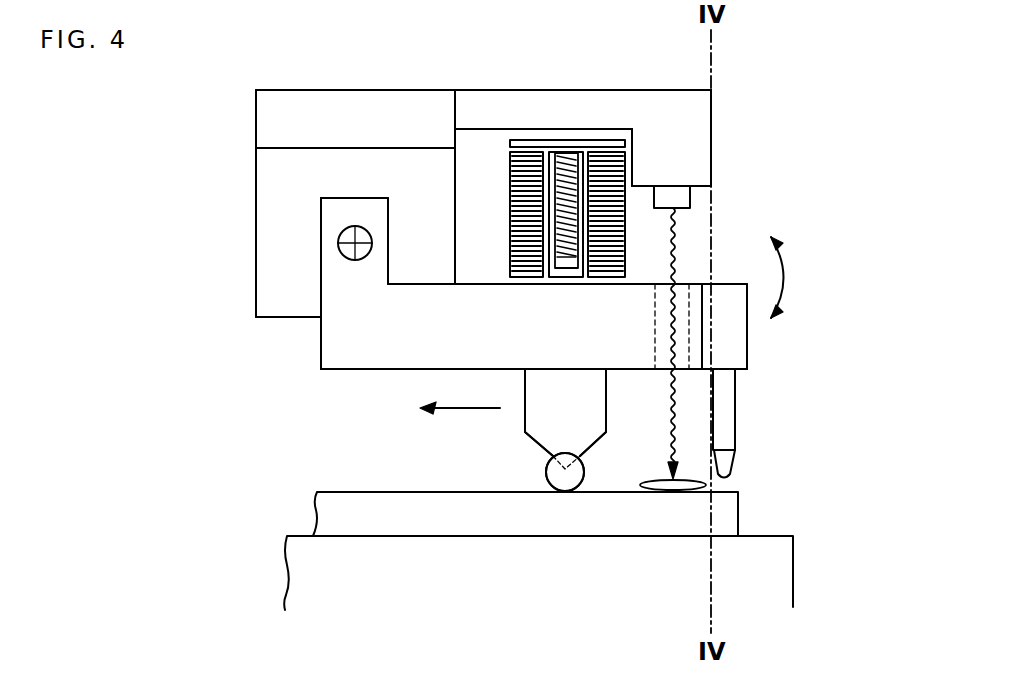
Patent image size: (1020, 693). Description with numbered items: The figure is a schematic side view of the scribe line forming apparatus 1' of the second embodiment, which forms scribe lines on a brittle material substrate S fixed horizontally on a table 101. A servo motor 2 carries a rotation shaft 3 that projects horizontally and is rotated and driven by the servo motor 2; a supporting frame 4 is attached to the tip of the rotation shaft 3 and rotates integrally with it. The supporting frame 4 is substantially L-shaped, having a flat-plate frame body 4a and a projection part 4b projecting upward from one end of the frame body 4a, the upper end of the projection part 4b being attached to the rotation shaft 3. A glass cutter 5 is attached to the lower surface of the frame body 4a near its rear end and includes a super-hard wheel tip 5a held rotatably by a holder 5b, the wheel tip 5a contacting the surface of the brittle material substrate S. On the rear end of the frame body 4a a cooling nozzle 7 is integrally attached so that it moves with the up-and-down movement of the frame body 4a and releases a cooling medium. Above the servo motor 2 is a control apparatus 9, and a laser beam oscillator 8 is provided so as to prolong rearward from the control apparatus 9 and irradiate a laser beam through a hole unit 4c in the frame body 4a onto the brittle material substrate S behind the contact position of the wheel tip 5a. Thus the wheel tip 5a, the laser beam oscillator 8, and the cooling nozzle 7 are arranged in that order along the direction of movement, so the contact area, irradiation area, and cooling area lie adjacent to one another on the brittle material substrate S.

The scribe line forming apparatus 1' is at (466, 211).
The servo motor 2 is at (268, 181).
The rotation shaft 3 is at (345, 240).
The supporting frame 4 is at (352, 348).
The frame body 4a is at (375, 360).
The projection part 4b is at (345, 323).
The hole unit 4c is at (677, 283).
The glass cutter 5 is at (617, 400).
The wheel tip 5a is at (578, 475).
The holder 5b is at (590, 422).
The cooling nozzle 7 is at (727, 410).
The laser beam oscillator 8 is at (691, 117).
The control apparatus 9 is at (272, 124).
The brittle material substrate S is at (337, 512).
The table 101 is at (768, 582).